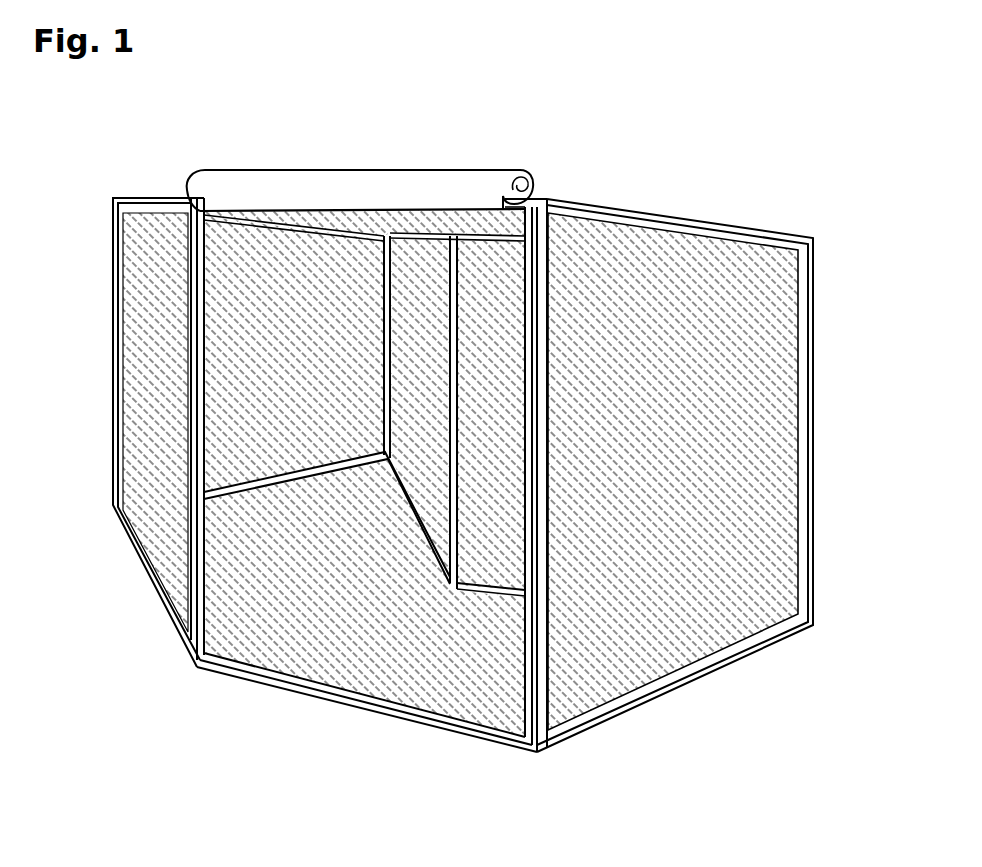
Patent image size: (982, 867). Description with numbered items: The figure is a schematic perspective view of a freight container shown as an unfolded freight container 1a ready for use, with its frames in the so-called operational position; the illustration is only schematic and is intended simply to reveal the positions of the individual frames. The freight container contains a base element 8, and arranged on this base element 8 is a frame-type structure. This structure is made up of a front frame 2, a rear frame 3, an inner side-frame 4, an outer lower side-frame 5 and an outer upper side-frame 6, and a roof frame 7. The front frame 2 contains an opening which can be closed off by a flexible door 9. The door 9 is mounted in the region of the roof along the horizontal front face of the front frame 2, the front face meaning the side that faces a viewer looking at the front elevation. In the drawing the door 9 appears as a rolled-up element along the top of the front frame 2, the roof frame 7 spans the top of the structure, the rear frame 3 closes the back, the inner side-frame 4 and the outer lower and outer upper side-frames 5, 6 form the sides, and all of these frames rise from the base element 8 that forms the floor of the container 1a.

The unfolded freight container 1a is at (597, 130).
The front frame 2 is at (530, 684).
The rear frame 3 is at (505, 325).
The inner side-frame 4 is at (765, 465).
The outer lower side-frame 5 is at (265, 552).
The outer upper side-frame 6 is at (235, 304).
The roof frame 7 is at (507, 217).
The base element 8 is at (270, 653).
The flexible door 9 is at (225, 188).